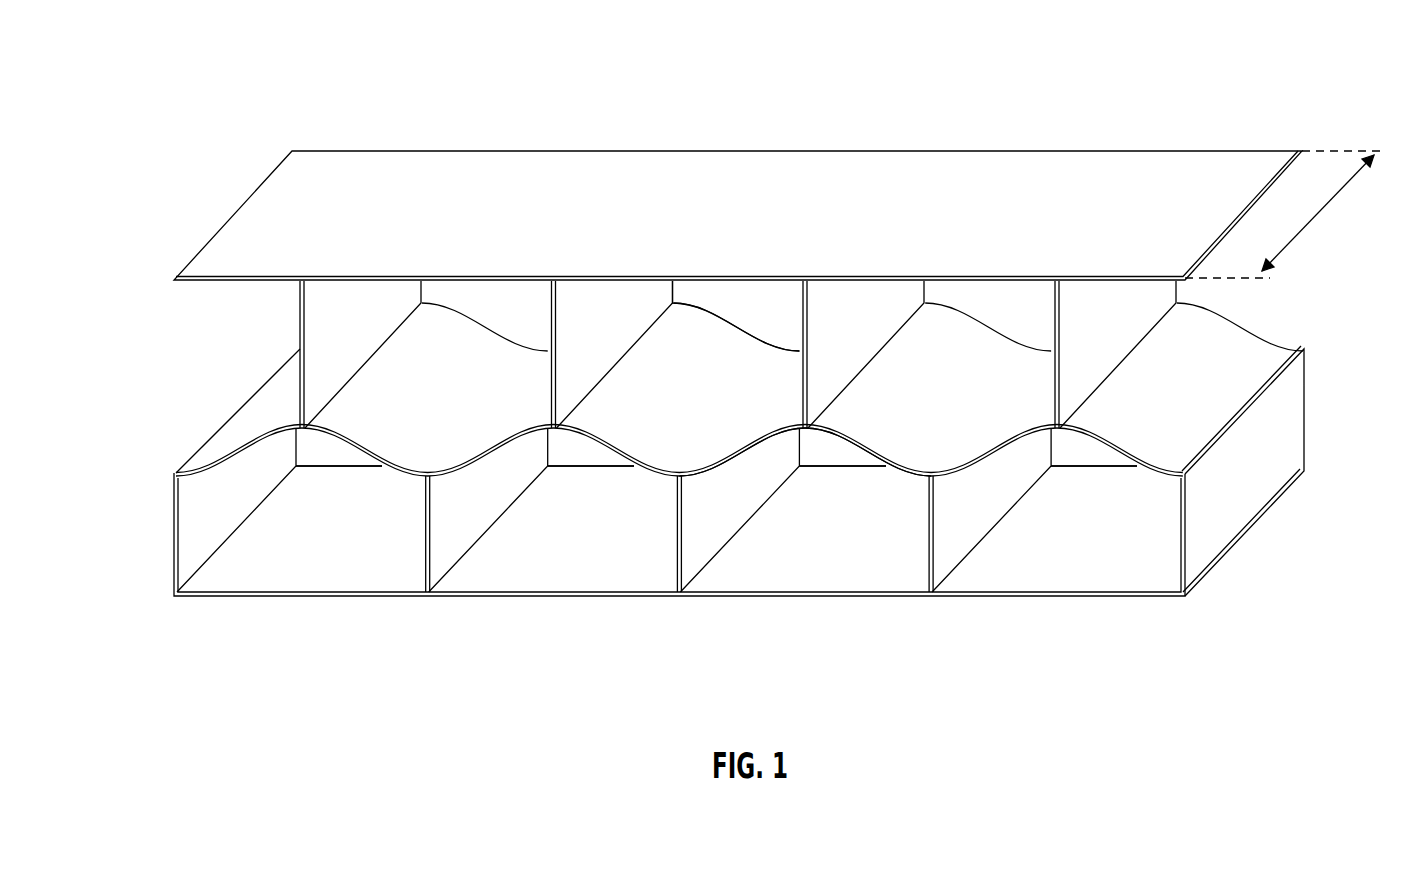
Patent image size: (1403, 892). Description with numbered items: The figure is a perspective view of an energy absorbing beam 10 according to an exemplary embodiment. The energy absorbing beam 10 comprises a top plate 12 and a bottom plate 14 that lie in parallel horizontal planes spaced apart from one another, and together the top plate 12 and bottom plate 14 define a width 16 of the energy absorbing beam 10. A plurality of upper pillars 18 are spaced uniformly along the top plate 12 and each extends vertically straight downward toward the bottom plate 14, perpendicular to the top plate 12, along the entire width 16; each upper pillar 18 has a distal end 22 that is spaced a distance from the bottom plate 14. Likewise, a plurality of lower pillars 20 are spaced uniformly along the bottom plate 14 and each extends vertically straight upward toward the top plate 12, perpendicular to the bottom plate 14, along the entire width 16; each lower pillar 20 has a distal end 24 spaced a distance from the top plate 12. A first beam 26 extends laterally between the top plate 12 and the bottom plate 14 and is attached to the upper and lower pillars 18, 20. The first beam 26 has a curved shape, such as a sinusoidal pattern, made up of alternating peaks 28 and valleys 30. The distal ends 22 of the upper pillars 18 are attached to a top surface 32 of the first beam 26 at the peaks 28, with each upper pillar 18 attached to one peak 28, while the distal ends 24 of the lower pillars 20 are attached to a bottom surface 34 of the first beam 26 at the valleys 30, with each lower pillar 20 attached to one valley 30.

The energy absorbing beam 10 is at (322, 656).
The top plate 12 is at (400, 178).
The bottom plate 14 is at (247, 580).
The width 16 is at (1318, 214).
The upper pillars 18 is at (298, 315).
The lower pillars 20 is at (190, 518).
The distal end 22 is at (338, 396).
The distal end 24 is at (424, 479).
The first beam 26 is at (217, 456).
The peaks 28 is at (433, 318).
The valleys 30 is at (417, 458).
The top surface 32 is at (700, 344).
The bottom surface 34 is at (838, 440).